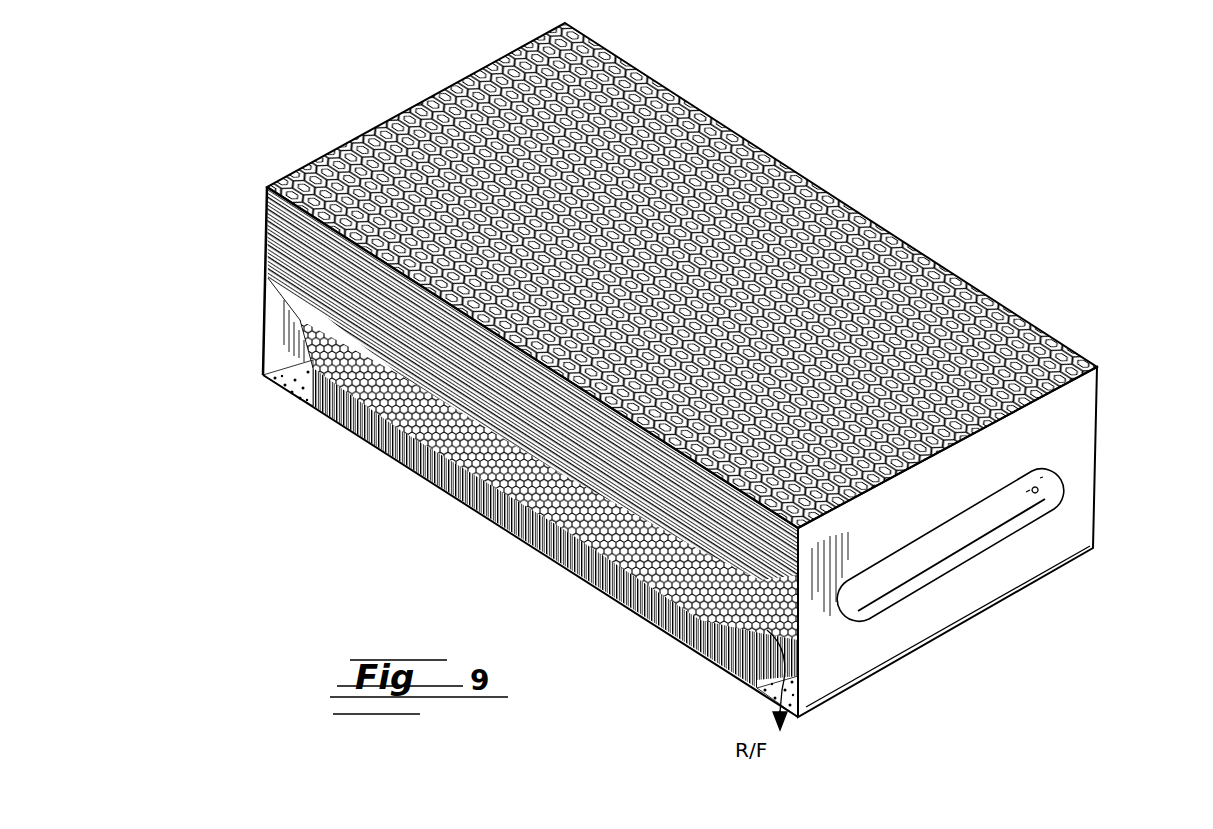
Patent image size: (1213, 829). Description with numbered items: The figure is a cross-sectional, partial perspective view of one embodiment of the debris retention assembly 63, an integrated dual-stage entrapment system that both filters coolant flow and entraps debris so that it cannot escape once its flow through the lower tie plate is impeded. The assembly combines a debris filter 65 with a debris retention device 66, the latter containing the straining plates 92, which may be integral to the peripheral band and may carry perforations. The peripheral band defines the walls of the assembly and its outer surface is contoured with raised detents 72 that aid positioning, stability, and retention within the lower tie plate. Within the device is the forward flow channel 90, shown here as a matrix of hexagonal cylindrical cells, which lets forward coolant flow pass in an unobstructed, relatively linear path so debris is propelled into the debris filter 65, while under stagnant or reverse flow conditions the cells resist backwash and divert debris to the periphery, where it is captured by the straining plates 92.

The debris retention assembly 63 is at (1143, 340).
The debris filter 65 is at (773, 157).
The debris retention device 66 is at (233, 262).
The raised detents 72 is at (983, 548).
The forward flow channel 90 is at (535, 600).
The straining plates 92 is at (282, 388).